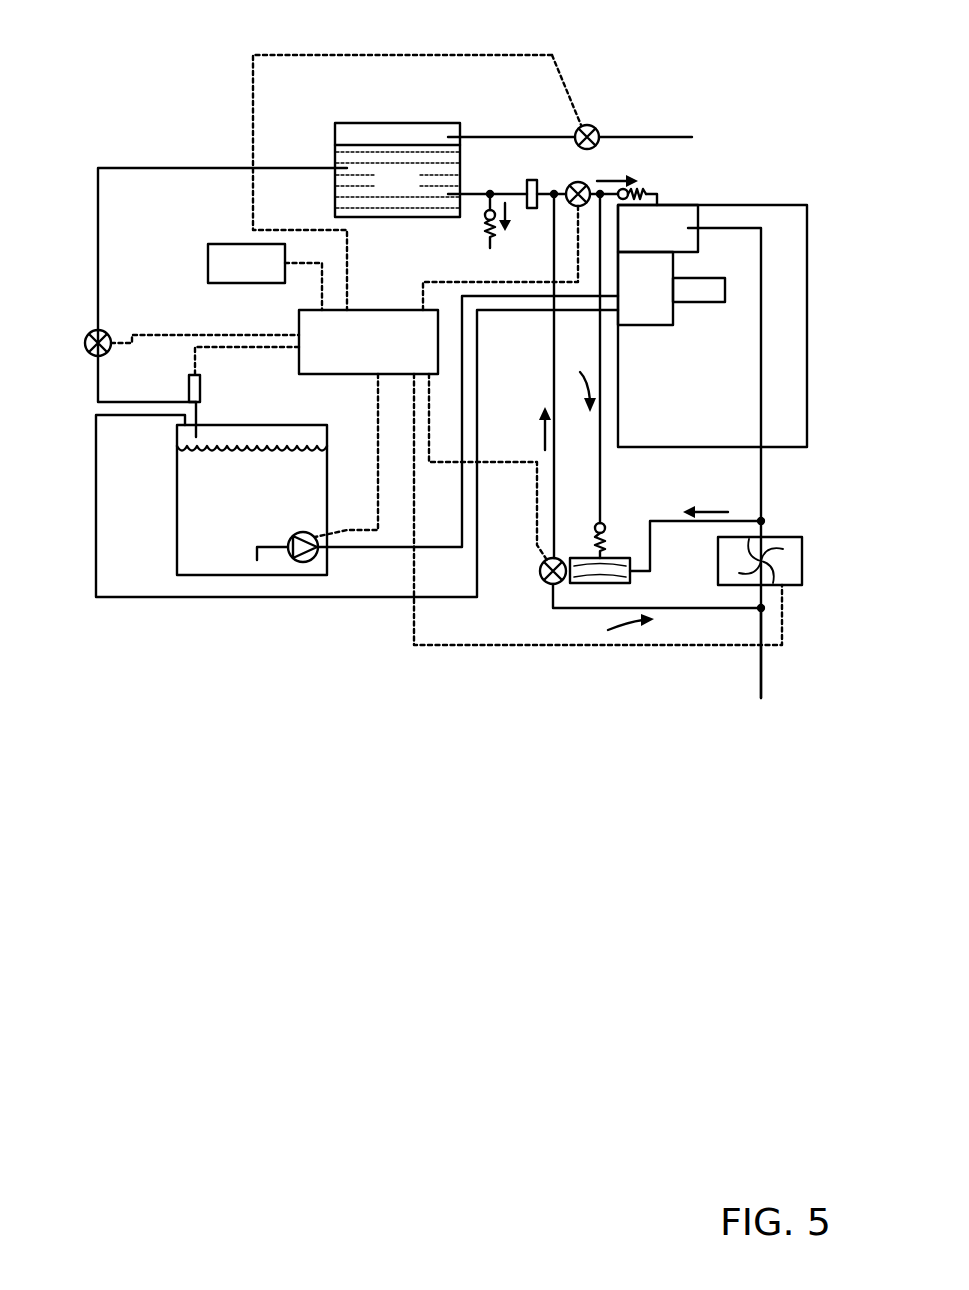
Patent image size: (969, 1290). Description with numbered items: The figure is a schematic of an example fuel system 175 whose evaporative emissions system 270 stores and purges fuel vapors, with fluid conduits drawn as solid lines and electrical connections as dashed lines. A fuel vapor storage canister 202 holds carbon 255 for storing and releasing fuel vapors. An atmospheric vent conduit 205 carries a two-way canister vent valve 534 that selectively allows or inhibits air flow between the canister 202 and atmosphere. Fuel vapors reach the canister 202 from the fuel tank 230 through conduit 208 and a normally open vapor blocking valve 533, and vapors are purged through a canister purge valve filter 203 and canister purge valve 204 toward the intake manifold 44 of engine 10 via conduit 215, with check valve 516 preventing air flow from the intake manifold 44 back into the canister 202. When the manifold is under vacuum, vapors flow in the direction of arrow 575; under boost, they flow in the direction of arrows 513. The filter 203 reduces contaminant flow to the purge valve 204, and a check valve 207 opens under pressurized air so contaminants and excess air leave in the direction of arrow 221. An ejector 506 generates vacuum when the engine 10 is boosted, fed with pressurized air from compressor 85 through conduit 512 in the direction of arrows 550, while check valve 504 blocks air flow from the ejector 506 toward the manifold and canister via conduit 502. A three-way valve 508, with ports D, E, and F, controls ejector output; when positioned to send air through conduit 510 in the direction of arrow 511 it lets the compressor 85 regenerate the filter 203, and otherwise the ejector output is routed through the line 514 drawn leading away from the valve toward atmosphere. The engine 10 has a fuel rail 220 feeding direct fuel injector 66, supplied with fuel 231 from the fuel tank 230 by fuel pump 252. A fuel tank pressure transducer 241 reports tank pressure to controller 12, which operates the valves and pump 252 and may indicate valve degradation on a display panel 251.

The fuel system 175 is at (127, 38).
The evaporative emissions system 270 is at (565, 44).
The fuel vapor storage canister 202 is at (370, 156).
The carbon 255 is at (397, 180).
The atmospheric vent conduit 205 is at (476, 136).
The two-way canister vent valve 534 is at (590, 125).
The canister purge valve filter 203 is at (526, 186).
The canister purge valve 204 is at (585, 182).
The arrow 575 is at (633, 170).
The check valve 516 is at (634, 190).
The conduit 215 is at (659, 200).
The check valve 207 is at (485, 232).
The arrow 221 is at (522, 229).
The conduit 208 is at (98, 215).
The display panel 251 is at (265, 277).
The vapor blocking valve 533 is at (110, 332).
The controller 12 is at (488, 425).
The fuel tank pressure transducer 241 is at (188, 392).
The fuel tank 230 is at (203, 426).
The fuel 231 is at (274, 495).
The fuel pump 252 is at (293, 535).
The engine 10 is at (807, 275).
The intake manifold 44 is at (658, 228).
The fuel rail 220 is at (645, 288).
The direct fuel injector 66 is at (699, 290).
The conduit 510 is at (553, 373).
The arrow 511 is at (543, 437).
The arrows 513 is at (605, 499).
The conduit 502 is at (602, 468).
The check valve 504 is at (604, 525).
The ejector 506 is at (630, 582).
The three-way valve 508 is at (541, 574).
The conduit 514 is at (700, 609).
The conduit 512 is at (738, 521).
The arrows 550 is at (700, 511).
The compressor 85 is at (717, 562).